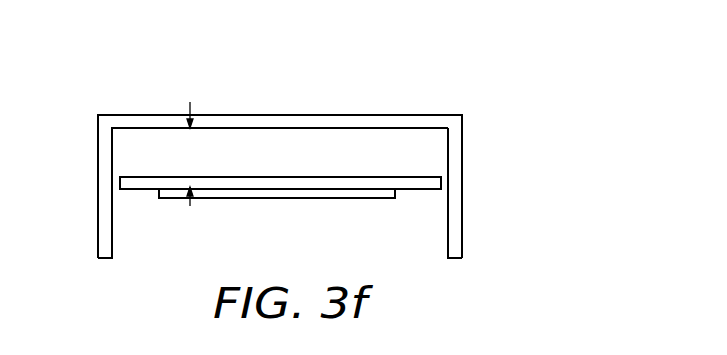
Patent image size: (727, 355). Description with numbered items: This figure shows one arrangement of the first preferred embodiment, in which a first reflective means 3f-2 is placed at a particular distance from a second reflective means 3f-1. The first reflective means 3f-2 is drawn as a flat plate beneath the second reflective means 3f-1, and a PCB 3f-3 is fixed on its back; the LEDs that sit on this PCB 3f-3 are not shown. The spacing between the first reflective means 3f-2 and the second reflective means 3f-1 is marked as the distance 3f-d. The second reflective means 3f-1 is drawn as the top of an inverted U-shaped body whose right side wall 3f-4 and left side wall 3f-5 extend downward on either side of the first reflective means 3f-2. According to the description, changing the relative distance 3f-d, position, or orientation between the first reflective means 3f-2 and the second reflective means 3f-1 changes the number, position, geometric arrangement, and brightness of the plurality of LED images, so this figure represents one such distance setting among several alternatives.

The second reflective means 3f-1 is at (408, 123).
The first reflective means 3f-2 is at (438, 184).
The PCB 3f-3 is at (385, 191).
The right side wall 3f-4 is at (453, 155).
The left side wall 3f-5 is at (105, 200).
The distance 3f-d is at (182, 154).